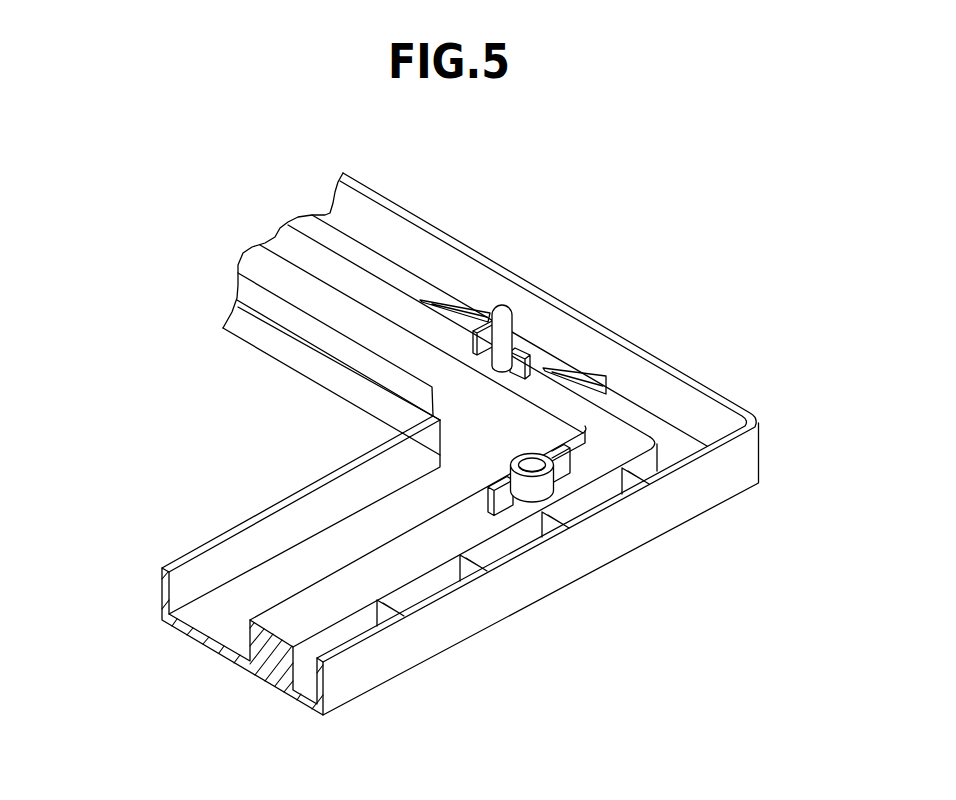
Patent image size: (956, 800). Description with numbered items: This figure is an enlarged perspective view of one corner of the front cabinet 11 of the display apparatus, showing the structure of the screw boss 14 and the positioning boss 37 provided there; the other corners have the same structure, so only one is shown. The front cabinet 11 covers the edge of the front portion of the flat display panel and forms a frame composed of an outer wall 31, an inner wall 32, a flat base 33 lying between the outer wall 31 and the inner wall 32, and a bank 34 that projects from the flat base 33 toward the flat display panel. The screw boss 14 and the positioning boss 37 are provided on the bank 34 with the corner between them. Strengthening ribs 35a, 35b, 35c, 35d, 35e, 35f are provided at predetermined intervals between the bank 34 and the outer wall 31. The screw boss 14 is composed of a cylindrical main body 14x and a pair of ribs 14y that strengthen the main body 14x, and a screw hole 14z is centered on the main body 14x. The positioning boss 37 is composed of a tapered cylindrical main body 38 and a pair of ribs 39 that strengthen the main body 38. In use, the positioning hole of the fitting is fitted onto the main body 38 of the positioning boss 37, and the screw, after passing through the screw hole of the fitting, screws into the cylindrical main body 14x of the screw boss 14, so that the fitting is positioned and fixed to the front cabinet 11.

The front cabinet 11 is at (541, 243).
The screw boss 14 is at (513, 472).
The cylindrical main body 14x is at (511, 466).
The pair of ribs 14y is at (492, 506).
The screw hole 14z is at (527, 458).
The outer wall 31 is at (676, 403).
The inner wall 32 is at (188, 553).
The flat base 33 is at (677, 438).
The bank 34 is at (580, 477).
The strengthening rib 35a is at (403, 615).
The strengthening rib 35b is at (484, 559).
The strengthening rib 35c is at (557, 524).
The strengthening rib 35d is at (643, 476).
The strengthening rib 35e is at (577, 370).
The strengthening rib 35f is at (466, 300).
The positioning boss 37 is at (512, 318).
The tapered cylindrical main body 38 is at (499, 304).
The pair of ribs 39 is at (472, 325).